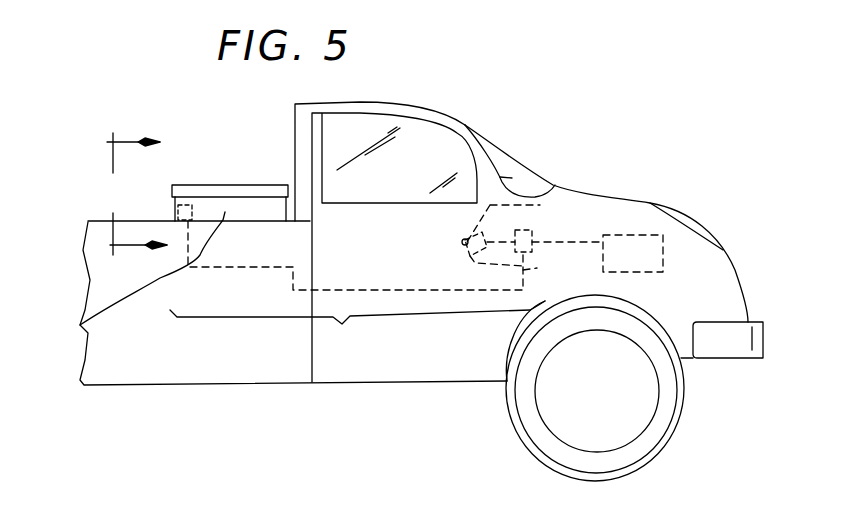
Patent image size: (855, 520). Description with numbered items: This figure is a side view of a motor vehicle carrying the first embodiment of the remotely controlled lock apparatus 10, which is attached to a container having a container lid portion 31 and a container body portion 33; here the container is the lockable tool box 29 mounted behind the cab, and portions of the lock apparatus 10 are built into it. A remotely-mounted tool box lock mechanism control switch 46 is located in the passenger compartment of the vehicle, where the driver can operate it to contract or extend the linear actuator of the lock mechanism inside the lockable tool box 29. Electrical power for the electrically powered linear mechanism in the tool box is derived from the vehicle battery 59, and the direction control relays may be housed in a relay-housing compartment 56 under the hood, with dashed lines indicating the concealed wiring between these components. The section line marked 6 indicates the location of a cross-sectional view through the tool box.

The remotely controlled lock apparatus 10 is at (342, 324).
The lockable tool box 29 is at (232, 185).
The container lid portion 31 is at (172, 193).
The container body portion 33 is at (82, 325).
The remotely-mounted tool box lock mechanism control switch 46 is at (492, 230).
The relay-housing compartment 56 is at (530, 228).
The battery 59 is at (637, 235).
The section line 6- 6 is at (130, 192).